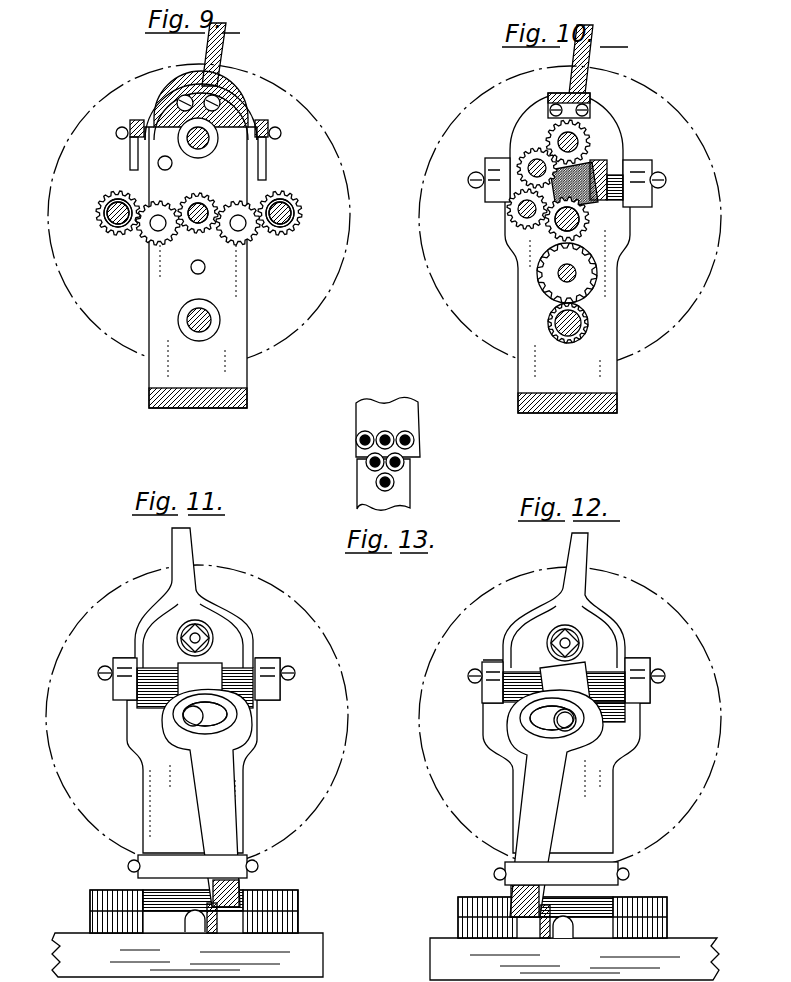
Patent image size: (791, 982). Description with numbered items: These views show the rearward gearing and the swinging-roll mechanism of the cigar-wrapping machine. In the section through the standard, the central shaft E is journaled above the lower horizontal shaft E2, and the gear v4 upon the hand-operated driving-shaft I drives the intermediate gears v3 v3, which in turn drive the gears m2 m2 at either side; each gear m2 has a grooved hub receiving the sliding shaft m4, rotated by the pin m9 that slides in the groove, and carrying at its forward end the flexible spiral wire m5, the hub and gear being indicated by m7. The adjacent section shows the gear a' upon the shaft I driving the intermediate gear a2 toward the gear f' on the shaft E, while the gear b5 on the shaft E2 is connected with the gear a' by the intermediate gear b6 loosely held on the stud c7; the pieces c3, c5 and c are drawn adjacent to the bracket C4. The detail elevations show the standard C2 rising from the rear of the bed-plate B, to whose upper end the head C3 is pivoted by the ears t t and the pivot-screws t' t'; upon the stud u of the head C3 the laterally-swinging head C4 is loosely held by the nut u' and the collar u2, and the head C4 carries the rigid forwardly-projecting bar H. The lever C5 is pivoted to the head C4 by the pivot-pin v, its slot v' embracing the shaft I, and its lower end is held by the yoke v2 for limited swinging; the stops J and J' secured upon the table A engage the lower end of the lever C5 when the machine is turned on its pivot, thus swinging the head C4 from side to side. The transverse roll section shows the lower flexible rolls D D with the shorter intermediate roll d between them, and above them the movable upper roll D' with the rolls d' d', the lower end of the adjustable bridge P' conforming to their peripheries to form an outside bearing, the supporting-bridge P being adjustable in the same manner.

In FIG. 9, the bar H is at (221, 50).
In FIG. 10, the bar H is at (590, 52).
In FIG. 9, the head C3 is at (228, 115).
In FIG. 10, the head C3 is at (620, 145).
In FIG. 11, the head C3 is at (242, 622).
In FIG. 12, the head C3 is at (618, 636).
In FIG. 9, the central shaft E is at (210, 140).
In FIG. 10, the central shaft E is at (580, 145).
In FIG. 9, the horizontal shaft E2 is at (212, 320).
In FIG. 10, the horizontal shaft E2 is at (553, 323).
In FIG. 9, the gear m2 is at (298, 193).
In FIG. 9, the flexible spiral wire m5 is at (120, 200).
In FIG. 9, the side gear m7 is at (106, 213).
In FIG. 9, the pin m9 is at (280, 200).
In FIG. 9, the sliding shaft m4 is at (286, 229).
In FIG. 9, the intermediate gears v3 is at (148, 239).
In FIG. 9, the gear v4 is at (198, 200).
In FIG. 9, the hand-operated driving-shaft I is at (208, 208).
In FIG. 10, the hand-operated driving-shaft I is at (578, 219).
In FIG. 11, the hand-operated driving-shaft I is at (193, 716).
In FIG. 12, the hand-operated driving-shaft I is at (565, 720).
In FIG. 10, the gear c3 is at (533, 156).
In FIG. 10, the gear f' is at (576, 116).
In FIG. 10, the laterally-swinging head C4 is at (600, 170).
In FIG. 11, the laterally-swinging head C4 is at (194, 620).
In FIG. 12, the laterally-swinging head C4 is at (566, 625).
In FIG. 10, the ears t is at (568, 176).
In FIG. 11, the ears t is at (201, 669).
In FIG. 12, the ears t is at (567, 673).
In FIG. 10, the pivot-screws t' is at (566, 177).
In FIG. 11, the pivot-screws t' is at (200, 663).
In FIG. 12, the pivot-screws t' is at (568, 670).
In FIG. 10, the block c5 is at (574, 185).
In FIG. 10, the block c is at (615, 184).
In FIG. 11, the block c is at (185, 921).
In FIG. 12, the block c is at (574, 926).
In FIG. 10, the intermediate gear a2 is at (510, 212).
In FIG. 10, the gear a' is at (575, 219).
In FIG. 10, the stud c7 is at (562, 270).
In FIG. 10, the intermediate gear b6 is at (592, 262).
In FIG. 10, the gear b5 is at (588, 330).
In FIG. 13, the adjustable bridge P' is at (388, 419).
In FIG. 13, the supporting-bridge P is at (390, 484).
In FIG. 13, the rolls d' is at (386, 432).
In FIG. 13, the movable upper roll D' is at (386, 432).
In FIG. 13, the flexible rolls D is at (386, 461).
In FIG. 13, the intermediate roll d is at (390, 483).
In FIG. 11, the pivot-stud u is at (185, 638).
In FIG. 12, the pivot-stud u is at (555, 643).
In FIG. 11, the nut u' is at (203, 632).
In FIG. 12, the nut u' is at (574, 640).
In FIG. 11, the collar u2 is at (210, 639).
In FIG. 12, the collar u2 is at (580, 646).
In FIG. 11, the pivot-pin v is at (195, 681).
In FIG. 12, the pivot-pin v is at (564, 691).
In FIG. 11, the slot v' is at (205, 716).
In FIG. 12, the slot v' is at (552, 720).
In FIG. 11, the lever C5 is at (207, 798).
In FIG. 12, the lever C5 is at (555, 803).
In FIG. 11, the standard C2 is at (196, 755).
In FIG. 12, the standard C2 is at (566, 755).
In FIG. 11, the yoke v2 is at (190, 858).
In FIG. 12, the yoke v2 is at (570, 866).
In FIG. 11, the bed-plate B is at (292, 897).
In FIG. 12, the bed-plate B is at (661, 904).
In FIG. 11, the table A is at (187, 955).
In FIG. 12, the table A is at (574, 959).
In FIG. 11, the stop J is at (218, 918).
In FIG. 12, the stop J' is at (535, 921).